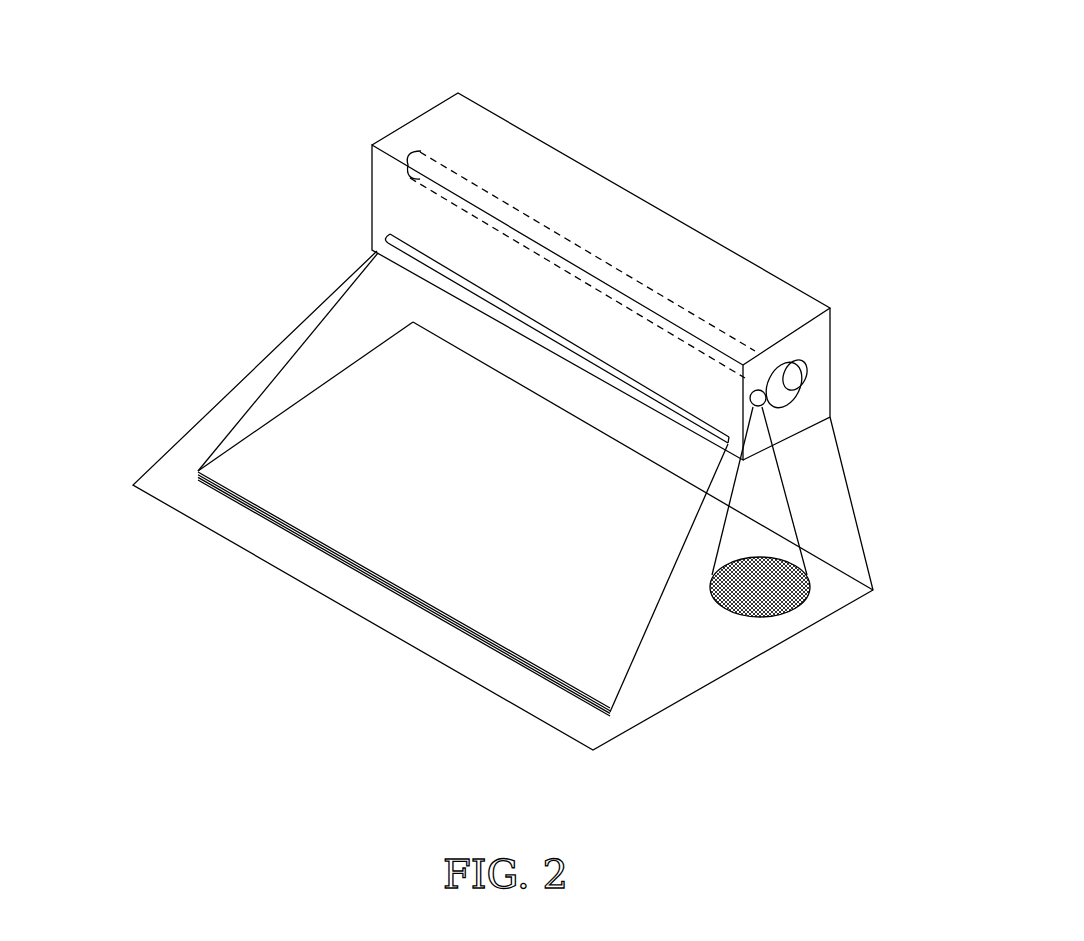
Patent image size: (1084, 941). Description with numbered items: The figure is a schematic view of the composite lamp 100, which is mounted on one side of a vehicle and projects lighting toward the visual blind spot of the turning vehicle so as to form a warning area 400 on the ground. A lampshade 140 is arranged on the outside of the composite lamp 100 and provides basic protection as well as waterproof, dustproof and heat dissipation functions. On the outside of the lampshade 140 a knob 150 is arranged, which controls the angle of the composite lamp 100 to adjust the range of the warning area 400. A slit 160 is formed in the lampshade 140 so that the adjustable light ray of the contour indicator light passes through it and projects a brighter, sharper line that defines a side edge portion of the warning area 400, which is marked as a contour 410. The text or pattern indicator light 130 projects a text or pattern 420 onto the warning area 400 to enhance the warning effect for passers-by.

The composite lamp 100 is at (623, 272).
The text or pattern indicator light 130 is at (764, 407).
The lampshade 140 is at (448, 112).
The knob 150 is at (815, 366).
The slit 160 is at (422, 250).
The warning area 400 is at (237, 527).
The contour 410 is at (437, 614).
The text or pattern 420 is at (803, 601).